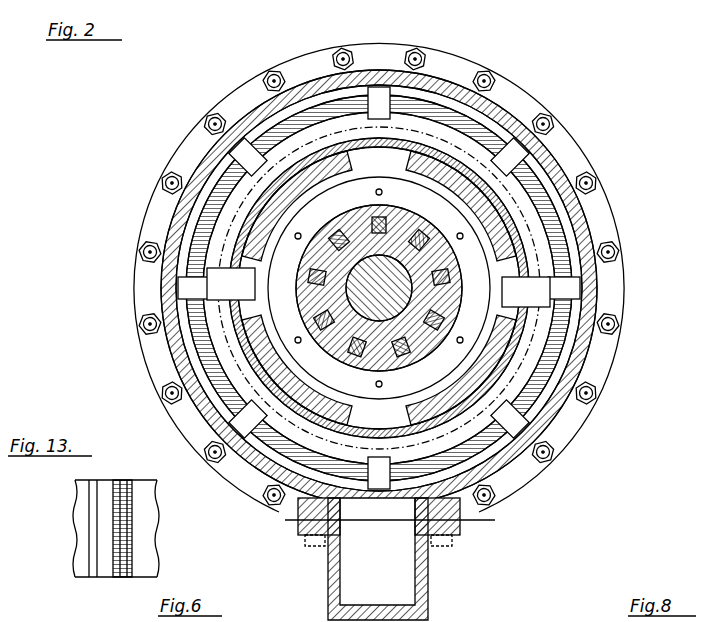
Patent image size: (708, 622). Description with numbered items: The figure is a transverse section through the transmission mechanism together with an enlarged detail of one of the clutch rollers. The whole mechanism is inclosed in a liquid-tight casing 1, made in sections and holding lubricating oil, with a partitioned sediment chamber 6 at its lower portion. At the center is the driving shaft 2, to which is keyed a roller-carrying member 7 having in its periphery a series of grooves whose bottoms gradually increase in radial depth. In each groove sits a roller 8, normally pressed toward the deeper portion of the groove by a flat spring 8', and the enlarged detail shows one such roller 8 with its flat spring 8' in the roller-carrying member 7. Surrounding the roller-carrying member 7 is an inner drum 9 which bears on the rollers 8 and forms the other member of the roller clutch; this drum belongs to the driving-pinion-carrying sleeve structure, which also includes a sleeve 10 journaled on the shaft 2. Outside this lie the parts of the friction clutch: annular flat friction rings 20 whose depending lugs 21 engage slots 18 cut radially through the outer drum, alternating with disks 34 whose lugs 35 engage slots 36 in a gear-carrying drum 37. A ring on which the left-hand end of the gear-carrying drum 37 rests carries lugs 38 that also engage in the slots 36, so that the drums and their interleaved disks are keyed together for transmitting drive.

In FIG. 2, the casing 1 is at (165, 222).
In FIG. 2, the driving shaft 2 is at (379, 324).
In FIG. 2, the partitioned sediment chamber 6 is at (332, 560).
In FIG. 2, the roller-carrying member 7 is at (318, 290).
In FIG. 13, the roller-carrying member 7 is at (82, 525).
In FIG. 2, the roller 8 is at (395, 289).
In FIG. 13, the roller 8 is at (121, 515).
In FIG. 13, the flat spring 8' is at (154, 528).
In FIG. 2, the inner drum 9 is at (379, 288).
In FIG. 2, the sleeve 10 is at (258, 340).
In FIG. 2, the slots 18 is at (373, 356).
In FIG. 2, the annular flat friction rings 20 is at (526, 292).
In FIG. 2, the depending lugs 21 is at (382, 118).
In FIG. 2, the disks 34 is at (498, 145).
In FIG. 2, the lugs 35 is at (520, 160).
In FIG. 2, the slots 36 is at (408, 150).
In FIG. 2, the gear-carrying drum 37 is at (222, 212).
In FIG. 2, the lugs 38 is at (500, 588).